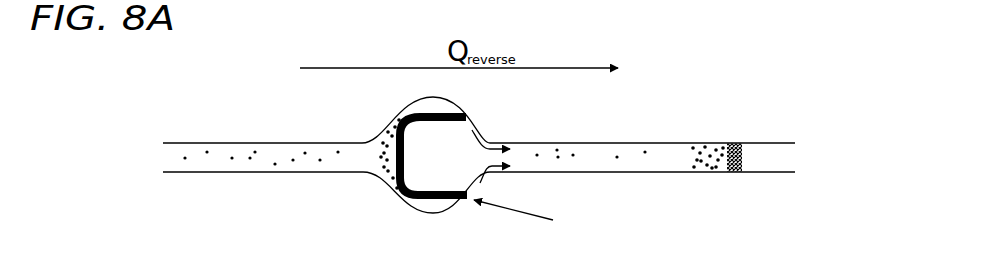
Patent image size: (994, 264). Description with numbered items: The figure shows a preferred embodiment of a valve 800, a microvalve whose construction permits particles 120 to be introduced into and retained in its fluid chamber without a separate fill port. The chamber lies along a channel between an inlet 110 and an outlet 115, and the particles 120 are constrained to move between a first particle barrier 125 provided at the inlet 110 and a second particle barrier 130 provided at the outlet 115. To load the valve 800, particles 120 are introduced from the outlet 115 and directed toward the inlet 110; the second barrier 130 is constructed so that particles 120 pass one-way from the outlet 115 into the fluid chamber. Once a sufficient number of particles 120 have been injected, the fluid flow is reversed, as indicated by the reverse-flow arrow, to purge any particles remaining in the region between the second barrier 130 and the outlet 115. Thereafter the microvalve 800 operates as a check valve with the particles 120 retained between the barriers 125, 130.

The valve 800 is at (787, 49).
The inlet 110 is at (775, 150).
The outlet 115 is at (197, 165).
The particles 120 is at (368, 160).
The first particle barrier 125 is at (728, 143).
The second particle barrier 130 is at (403, 193).